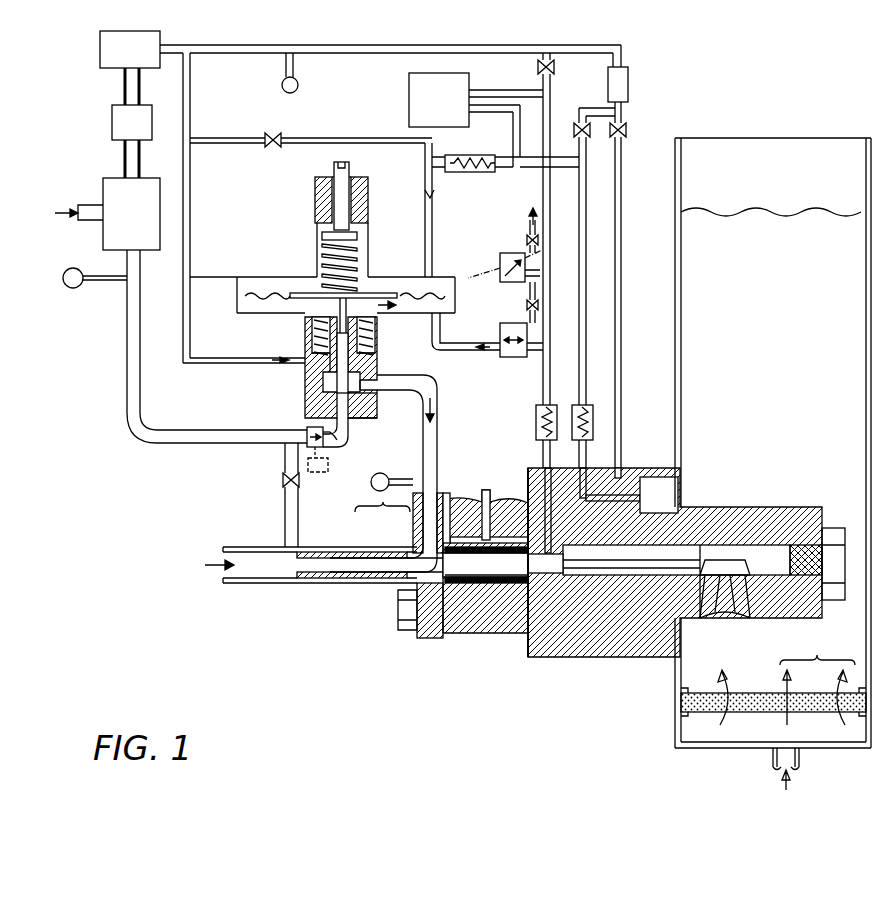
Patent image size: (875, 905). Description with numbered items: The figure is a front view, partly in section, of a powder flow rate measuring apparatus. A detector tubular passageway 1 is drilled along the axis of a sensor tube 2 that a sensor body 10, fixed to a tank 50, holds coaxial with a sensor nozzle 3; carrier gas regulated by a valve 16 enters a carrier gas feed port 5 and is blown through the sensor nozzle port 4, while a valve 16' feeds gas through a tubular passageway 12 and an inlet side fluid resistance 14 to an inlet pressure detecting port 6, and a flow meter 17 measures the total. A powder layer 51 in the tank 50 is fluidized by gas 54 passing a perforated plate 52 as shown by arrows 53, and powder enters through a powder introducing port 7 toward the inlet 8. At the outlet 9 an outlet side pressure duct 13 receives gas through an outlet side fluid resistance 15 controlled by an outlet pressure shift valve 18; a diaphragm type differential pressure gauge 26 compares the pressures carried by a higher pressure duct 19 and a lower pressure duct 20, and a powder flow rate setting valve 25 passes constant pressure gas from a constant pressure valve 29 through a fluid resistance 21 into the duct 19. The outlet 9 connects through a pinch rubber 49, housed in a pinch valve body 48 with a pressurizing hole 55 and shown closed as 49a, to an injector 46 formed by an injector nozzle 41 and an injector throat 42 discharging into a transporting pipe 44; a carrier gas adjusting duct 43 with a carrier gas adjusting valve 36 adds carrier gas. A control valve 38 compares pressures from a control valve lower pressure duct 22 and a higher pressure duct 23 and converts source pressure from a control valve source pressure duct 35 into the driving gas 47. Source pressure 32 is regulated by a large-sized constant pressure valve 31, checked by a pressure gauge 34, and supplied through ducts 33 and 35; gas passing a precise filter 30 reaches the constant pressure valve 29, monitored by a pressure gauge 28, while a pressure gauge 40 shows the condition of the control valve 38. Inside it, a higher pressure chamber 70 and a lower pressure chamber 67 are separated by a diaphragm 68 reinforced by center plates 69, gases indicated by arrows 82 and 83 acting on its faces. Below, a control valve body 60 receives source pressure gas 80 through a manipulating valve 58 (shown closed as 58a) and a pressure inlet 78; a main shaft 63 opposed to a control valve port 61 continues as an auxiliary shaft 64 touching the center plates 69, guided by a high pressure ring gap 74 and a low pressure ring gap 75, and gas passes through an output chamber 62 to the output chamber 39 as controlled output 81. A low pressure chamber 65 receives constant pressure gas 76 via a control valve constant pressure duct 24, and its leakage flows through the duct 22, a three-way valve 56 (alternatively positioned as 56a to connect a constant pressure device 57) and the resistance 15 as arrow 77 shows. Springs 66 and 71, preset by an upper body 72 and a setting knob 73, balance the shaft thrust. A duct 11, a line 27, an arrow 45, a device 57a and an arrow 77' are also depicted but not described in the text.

The detector tubular passageway 1 is at (628, 580).
The sensor tube 2 is at (550, 640).
The sensor nozzle 3 is at (735, 600).
The sensor nozzle port 4 is at (705, 600).
The carrier gas feed port 5 is at (800, 545).
The inlet pressure detecting port 6 is at (755, 575).
The powder introducing port 7 is at (720, 612).
The inlet 8 is at (705, 545).
The outlet 9 is at (540, 573).
The sensor body 10 is at (645, 466).
The pipe 11 is at (622, 387).
The tubular passageway 12 is at (589, 458).
The outlet side pressure duct 13 is at (556, 458).
The inlet side fluid resistance 14 is at (588, 405).
The outlet side fluid resistance 15 is at (553, 405).
The valve 16 is at (637, 128).
The valve 16' is at (596, 288).
The flow meter 17 is at (628, 86).
The outlet pressure shift valve 18 is at (556, 68).
The differential pressure gauge higher pressure duct 19 is at (513, 121).
The differential pressure gauge lower pressure duct 20 is at (485, 90).
The powder flow rate setting fluid resistance 21 is at (468, 155).
The control valve lower pressure duct 22 is at (465, 352).
The control valve higher pressure duct 23 is at (433, 214).
The control valve constant pressure duct 24 is at (337, 392).
The powder flow rate setting valve 25 is at (273, 132).
The diaphragm type differential pressure gauge 26 is at (409, 103).
The pipe 27 is at (370, 53).
The pressure gauge 28 is at (281, 84).
The constant pressure valve 29 is at (120, 68).
The precise filter 30 is at (150, 106).
The large-sized constant pressure valve 31 is at (152, 178).
The source pressure 32 is at (76, 210).
The duct 33 is at (143, 268).
The pressure gauge 34 is at (73, 289).
The control valve source pressure duct 35 is at (158, 432).
The carrier gas adjusting valve 36 is at (282, 484).
The control valve 38 is at (237, 285).
The control valve output chamber 39 is at (438, 373).
The pressure gauge 40 is at (371, 484).
The injector nozzle 41 is at (407, 556).
The injector throat 42 is at (355, 552).
The carrier gas adjusting duct 43 is at (303, 522).
The transporting pipe 44 is at (262, 583).
The flow direction 45 is at (210, 562).
The injector 46 is at (382, 496).
The driving gas 47 is at (452, 495).
The pinch valve body 48 is at (470, 640).
The pinch rubber 49 is at (497, 590).
The pinch rubber 49a is at (445, 633).
The tank 50 is at (765, 138).
The powder layer 51 is at (765, 210).
The perforated plate 52 is at (703, 712).
The arrows 53 is at (786, 678).
The gas 54 is at (800, 772).
The pressurizing hole 55 is at (487, 490).
The three-way valve 56 is at (520, 357).
The three-way valve 56a is at (501, 276).
The constant pressure device 57 is at (526, 305).
The throttle 57a is at (528, 238).
The manipulating valve 58 is at (307, 445).
The manipulating valve 58a is at (318, 472).
The control valve body 60 is at (349, 425).
The control valve port 61 is at (376, 413).
The control valve output chamber 62 is at (378, 398).
The control valve main shaft 63 is at (307, 405).
The control valve auxiliary shaft 64 is at (312, 341).
The control valve low pressure chamber 65 is at (310, 351).
The spring 66 is at (376, 331).
The control valve lower pressure chamber 67 is at (442, 338).
The diaphragm 68 is at (258, 292).
The center plates 69 is at (292, 292).
The control valve higher pressure chamber 70 is at (445, 277).
The spring 71 is at (358, 250).
The upper body 72 is at (368, 192).
The setting knob 73 is at (350, 170).
The high pressure ring gap 74 is at (337, 372).
The low pressure ring gap 75 is at (313, 336).
The control valve constant pressure gas 76 is at (252, 363).
The arrow 77 is at (389, 348).
The passage 77' is at (516, 215).
The control valve pressure inlet 78 is at (352, 440).
The control valve source pressure gas 80 is at (325, 445).
The controlled output 81 is at (438, 412).
The arrow 82 is at (433, 193).
The arrow 83 is at (490, 352).